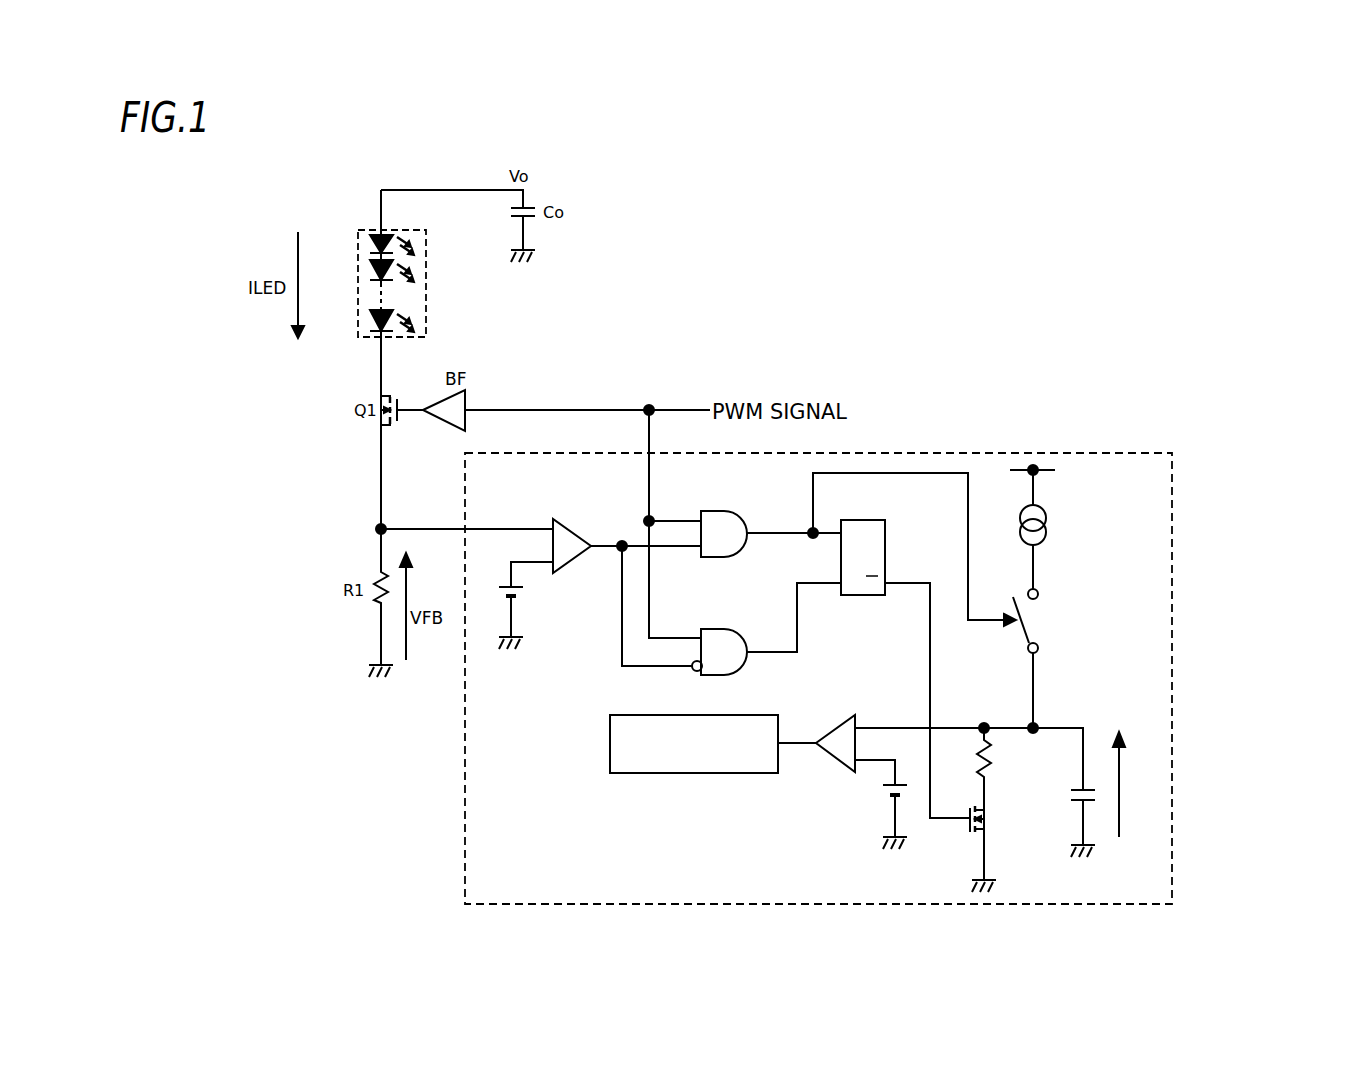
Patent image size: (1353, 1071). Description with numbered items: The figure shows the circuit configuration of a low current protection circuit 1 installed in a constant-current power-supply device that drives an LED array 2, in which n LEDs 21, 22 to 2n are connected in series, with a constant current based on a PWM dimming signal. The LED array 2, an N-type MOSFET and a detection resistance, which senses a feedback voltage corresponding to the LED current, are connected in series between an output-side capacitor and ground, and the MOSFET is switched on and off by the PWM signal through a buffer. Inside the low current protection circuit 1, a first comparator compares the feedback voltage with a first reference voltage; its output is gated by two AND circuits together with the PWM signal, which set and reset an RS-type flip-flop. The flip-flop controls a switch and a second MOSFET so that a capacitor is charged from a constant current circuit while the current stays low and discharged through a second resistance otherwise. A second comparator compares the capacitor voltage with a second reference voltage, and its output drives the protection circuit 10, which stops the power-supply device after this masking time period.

The low current protection circuit 1 is at (838, 452).
The LED array 2 is at (385, 283).
The LED 21 is at (368, 245).
The LED 22 is at (368, 271).
The LED 2n is at (368, 320).
The protection circuit 10 is at (723, 773).